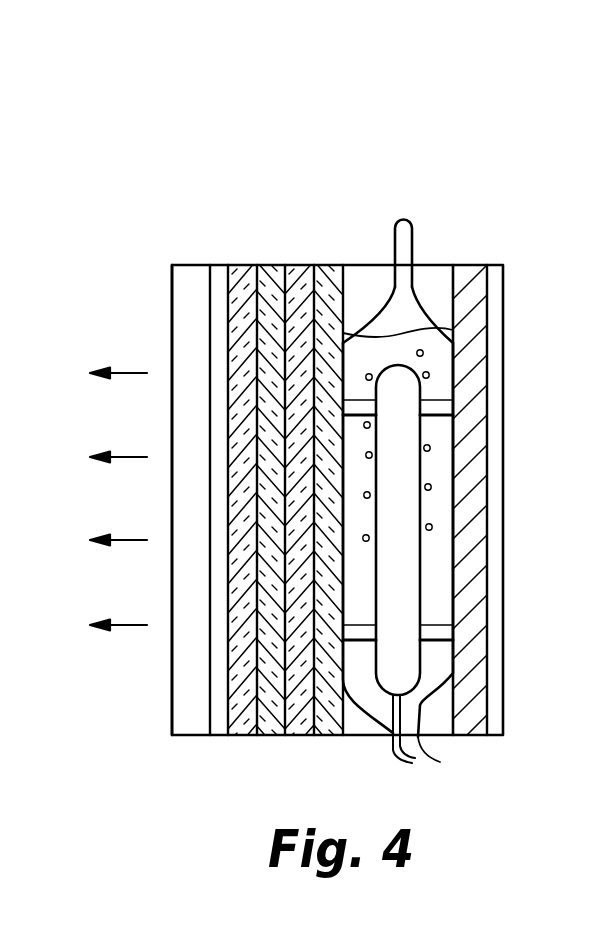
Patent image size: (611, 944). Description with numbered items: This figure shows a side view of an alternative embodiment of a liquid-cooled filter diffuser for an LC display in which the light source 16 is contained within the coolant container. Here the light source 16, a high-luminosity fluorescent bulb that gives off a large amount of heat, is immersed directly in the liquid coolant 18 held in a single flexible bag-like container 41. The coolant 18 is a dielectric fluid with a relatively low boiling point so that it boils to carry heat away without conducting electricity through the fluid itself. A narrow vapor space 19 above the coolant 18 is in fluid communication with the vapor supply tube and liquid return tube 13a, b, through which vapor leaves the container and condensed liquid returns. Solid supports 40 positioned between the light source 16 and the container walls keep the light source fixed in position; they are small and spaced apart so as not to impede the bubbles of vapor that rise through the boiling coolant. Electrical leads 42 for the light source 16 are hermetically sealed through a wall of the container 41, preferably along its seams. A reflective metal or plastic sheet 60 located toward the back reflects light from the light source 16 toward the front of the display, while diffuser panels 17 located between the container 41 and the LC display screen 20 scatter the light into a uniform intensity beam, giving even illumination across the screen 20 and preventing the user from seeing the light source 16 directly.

The vapor supply tube and liquid return tube 13a, b is at (412, 246).
The light source 16 is at (411, 527).
The diffuser panels 17 is at (300, 276).
The liquid coolant 18 is at (438, 563).
The vapor space 19 is at (405, 310).
The LC display screen 20 is at (180, 306).
The solid supports 40 is at (438, 635).
The flexible bag-like container 41 is at (447, 756).
The electrical leads 42 is at (404, 766).
The reflective sheet 60 is at (473, 365).